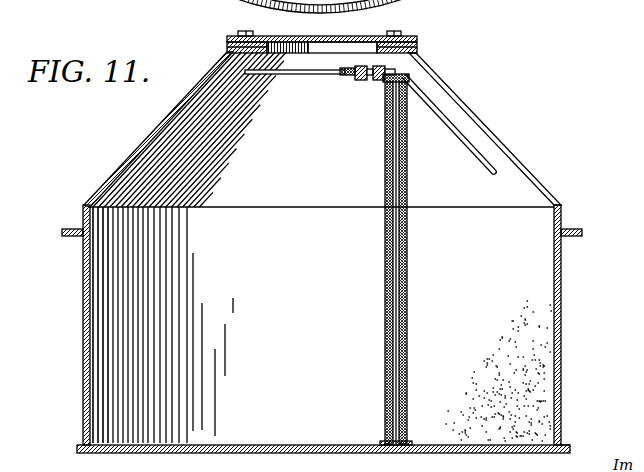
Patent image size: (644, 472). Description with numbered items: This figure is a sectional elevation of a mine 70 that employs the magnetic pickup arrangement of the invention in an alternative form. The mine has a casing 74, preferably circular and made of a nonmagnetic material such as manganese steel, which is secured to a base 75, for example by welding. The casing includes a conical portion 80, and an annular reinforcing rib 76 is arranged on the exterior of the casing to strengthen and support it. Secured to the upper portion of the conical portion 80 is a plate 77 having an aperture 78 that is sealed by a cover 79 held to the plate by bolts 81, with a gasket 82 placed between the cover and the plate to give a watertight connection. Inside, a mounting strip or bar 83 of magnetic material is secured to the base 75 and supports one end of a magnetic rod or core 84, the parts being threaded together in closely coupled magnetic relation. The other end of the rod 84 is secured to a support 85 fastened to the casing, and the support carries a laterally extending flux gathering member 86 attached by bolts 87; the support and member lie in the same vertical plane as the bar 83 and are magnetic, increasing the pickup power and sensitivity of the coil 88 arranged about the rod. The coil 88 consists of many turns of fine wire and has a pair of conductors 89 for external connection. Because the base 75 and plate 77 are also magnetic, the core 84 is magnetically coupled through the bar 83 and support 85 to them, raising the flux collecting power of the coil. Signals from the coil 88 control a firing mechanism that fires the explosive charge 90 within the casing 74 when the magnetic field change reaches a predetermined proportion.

The mine 70 is at (76, 361).
The casing 74 is at (561, 351).
The base 75 is at (569, 447).
The annular reinforcing rib 76 is at (574, 229).
The plate 77 is at (230, 49).
The aperture 78 is at (316, 47).
The cover 79 is at (335, 38).
The conical portion 80 is at (160, 128).
The bolts 81 is at (246, 31).
The gasket 82 is at (414, 44).
The mounting strip or bar 83 is at (262, 443).
The magnetic rod or core 84 is at (390, 82).
The support 85 is at (460, 133).
The flux gathering member 86 is at (313, 74).
The bolts 87 is at (365, 66).
The coil 88 is at (409, 304).
The conductors 89 is at (387, 437).
The explosive charge 90 is at (535, 389).